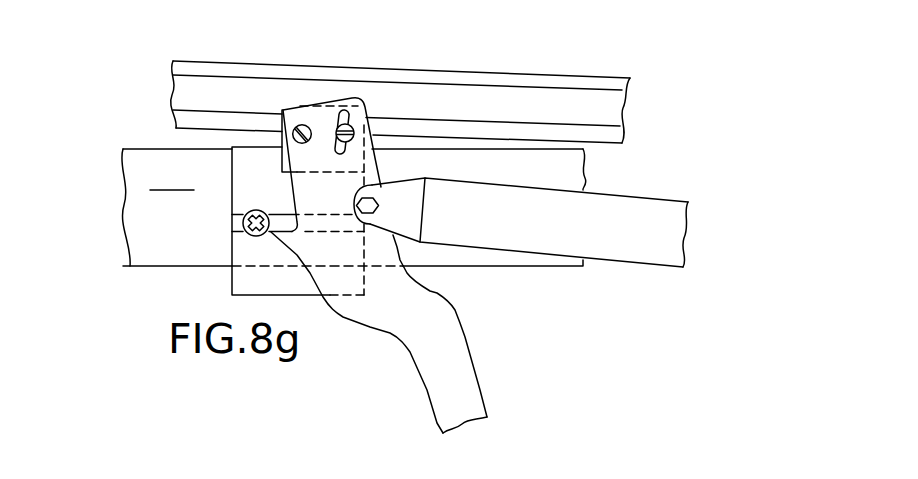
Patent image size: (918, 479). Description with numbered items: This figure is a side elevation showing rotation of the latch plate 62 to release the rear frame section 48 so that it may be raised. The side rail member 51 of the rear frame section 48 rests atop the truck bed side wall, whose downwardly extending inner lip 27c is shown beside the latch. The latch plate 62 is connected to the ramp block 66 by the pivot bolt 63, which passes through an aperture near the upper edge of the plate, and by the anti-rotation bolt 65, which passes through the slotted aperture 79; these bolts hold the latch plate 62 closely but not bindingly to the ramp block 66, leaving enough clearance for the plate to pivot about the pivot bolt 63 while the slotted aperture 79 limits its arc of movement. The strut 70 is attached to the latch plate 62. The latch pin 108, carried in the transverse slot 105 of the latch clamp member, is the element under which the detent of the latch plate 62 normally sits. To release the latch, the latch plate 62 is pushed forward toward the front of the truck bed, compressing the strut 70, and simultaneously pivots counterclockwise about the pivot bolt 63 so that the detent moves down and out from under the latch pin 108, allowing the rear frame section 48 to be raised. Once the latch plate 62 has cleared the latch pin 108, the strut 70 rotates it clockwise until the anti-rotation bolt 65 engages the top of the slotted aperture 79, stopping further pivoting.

The rear frame section 48 is at (501, 55).
The side rail member 51 is at (577, 78).
The inner lip 27c is at (354, 207).
The ramp block 66 is at (280, 167).
The pivot bolt 63 is at (300, 125).
The slotted aperture 79 is at (341, 112).
The anti-rotation bolt 65 is at (354, 129).
The transverse slot 105 is at (243, 220).
The latch pin 108 is at (247, 234).
The strut 70 is at (617, 243).
The latch plate 62 is at (452, 363).